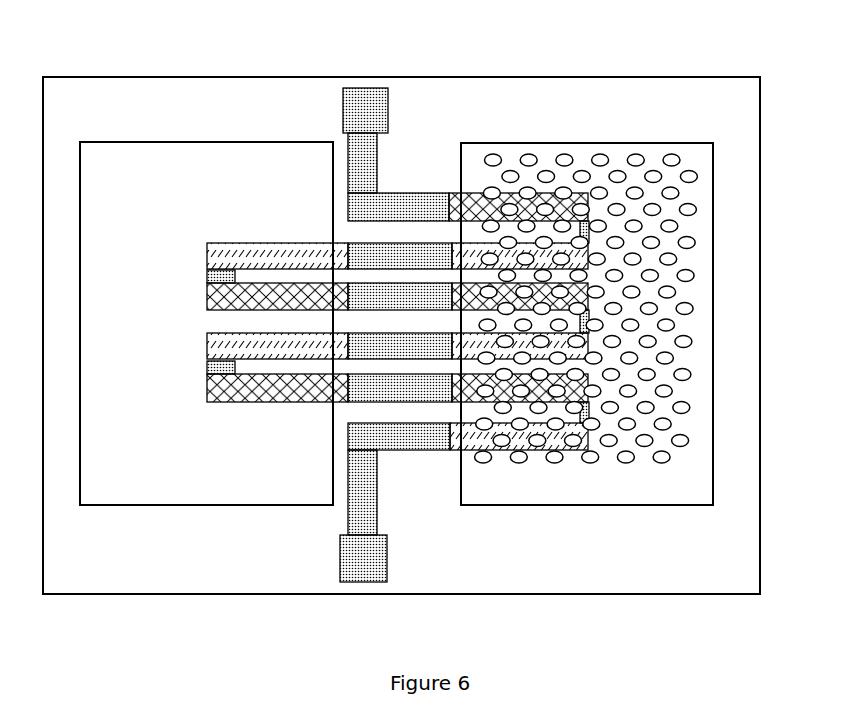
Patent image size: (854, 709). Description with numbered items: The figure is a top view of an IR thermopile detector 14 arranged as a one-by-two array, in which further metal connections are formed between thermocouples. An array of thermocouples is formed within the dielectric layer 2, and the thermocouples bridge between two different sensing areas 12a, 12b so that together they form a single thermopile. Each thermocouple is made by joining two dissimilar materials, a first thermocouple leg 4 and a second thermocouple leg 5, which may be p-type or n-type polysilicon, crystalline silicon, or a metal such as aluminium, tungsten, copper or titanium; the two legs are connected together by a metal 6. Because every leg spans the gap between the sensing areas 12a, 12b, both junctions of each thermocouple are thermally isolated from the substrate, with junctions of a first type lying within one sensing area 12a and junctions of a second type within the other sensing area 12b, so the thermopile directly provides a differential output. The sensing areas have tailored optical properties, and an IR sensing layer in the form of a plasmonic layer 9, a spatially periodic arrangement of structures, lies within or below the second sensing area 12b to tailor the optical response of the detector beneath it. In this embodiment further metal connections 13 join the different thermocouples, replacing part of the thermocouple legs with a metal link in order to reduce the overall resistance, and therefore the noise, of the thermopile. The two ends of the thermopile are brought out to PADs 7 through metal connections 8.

The detector 14 is at (622, 40).
The dielectric layer 2 is at (738, 192).
The sensing area 12a is at (148, 172).
The sensing area 12b is at (587, 165).
The plasmonic layer 9 is at (492, 194).
The further metal connections 13 is at (425, 299).
The thermocouple leg 5 is at (233, 342).
The metal 6 is at (215, 368).
The thermocouple leg 4 is at (222, 388).
The metal connections 8 is at (362, 513).
The PAD 7 is at (365, 555).